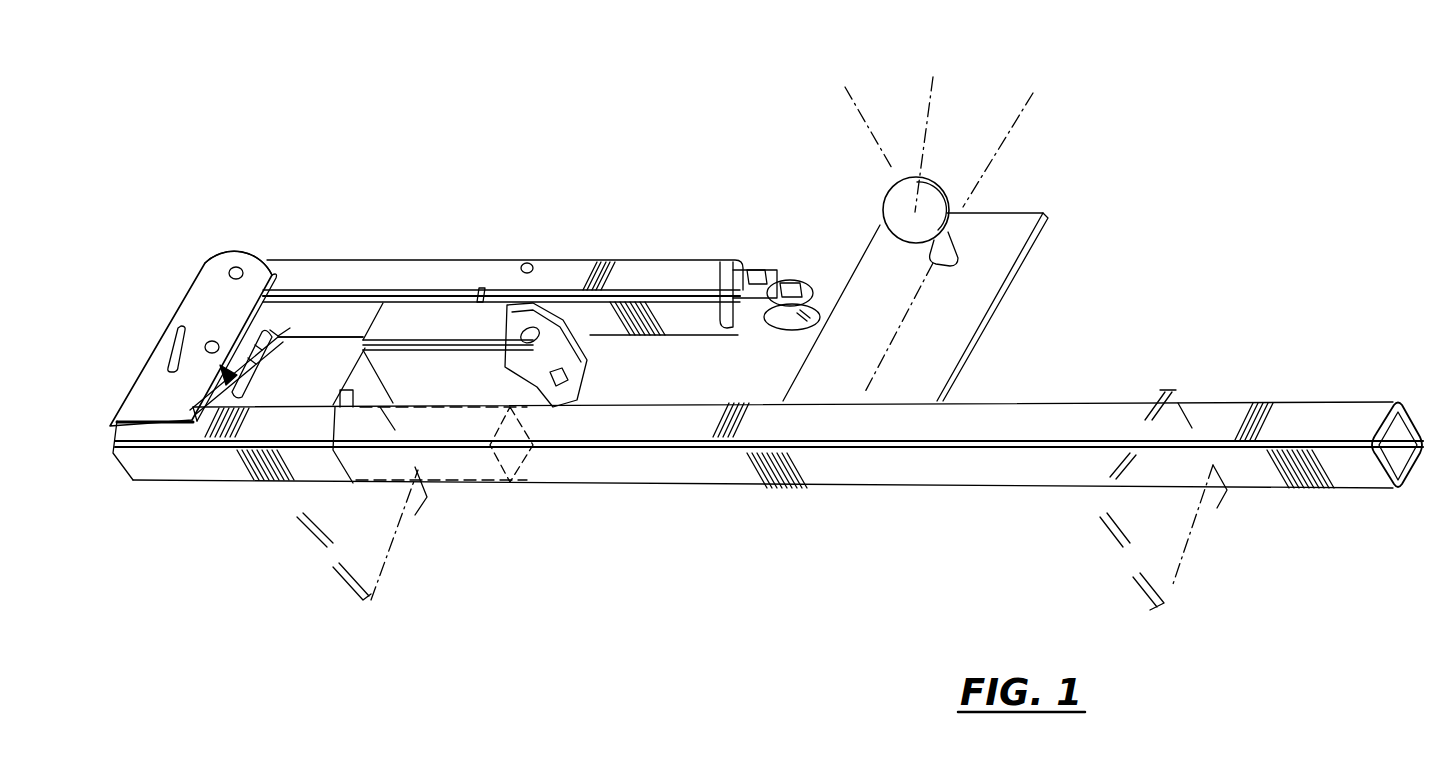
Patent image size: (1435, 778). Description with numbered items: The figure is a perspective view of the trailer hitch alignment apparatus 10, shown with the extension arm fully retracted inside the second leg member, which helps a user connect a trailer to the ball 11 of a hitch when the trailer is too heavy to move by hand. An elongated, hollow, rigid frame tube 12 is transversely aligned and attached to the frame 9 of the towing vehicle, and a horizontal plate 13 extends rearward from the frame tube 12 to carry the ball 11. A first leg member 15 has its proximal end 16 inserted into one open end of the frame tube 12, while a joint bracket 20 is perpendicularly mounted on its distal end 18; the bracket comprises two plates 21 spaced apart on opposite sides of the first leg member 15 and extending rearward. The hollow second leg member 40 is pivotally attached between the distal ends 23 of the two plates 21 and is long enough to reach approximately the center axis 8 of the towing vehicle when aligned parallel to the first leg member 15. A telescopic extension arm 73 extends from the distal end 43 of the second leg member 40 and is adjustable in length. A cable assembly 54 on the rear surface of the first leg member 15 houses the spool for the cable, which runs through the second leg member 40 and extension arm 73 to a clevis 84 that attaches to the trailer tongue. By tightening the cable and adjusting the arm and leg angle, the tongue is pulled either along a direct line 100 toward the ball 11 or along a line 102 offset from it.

The center axis 8 is at (1003, 147).
The frame 9 is at (346, 565).
The trailer hitch alignment apparatus 10 is at (438, 138).
The ball 11 is at (901, 201).
The frame tube 12 is at (1328, 404).
The horizontal plate 13 is at (1016, 213).
The first leg member 15 is at (274, 484).
The proximal end 16 is at (418, 468).
The distal end 18 is at (165, 472).
The joint bracket 20 is at (183, 292).
The plates 21 is at (160, 386).
The distal ends 23 is at (243, 255).
The second leg member 40 is at (365, 277).
The distal end 43 is at (688, 275).
The cable assembly 54 is at (452, 326).
The telescopic extension arm 73 is at (745, 323).
The clevis 84 is at (801, 282).
The direct line 100 is at (860, 115).
The line 102 is at (933, 82).